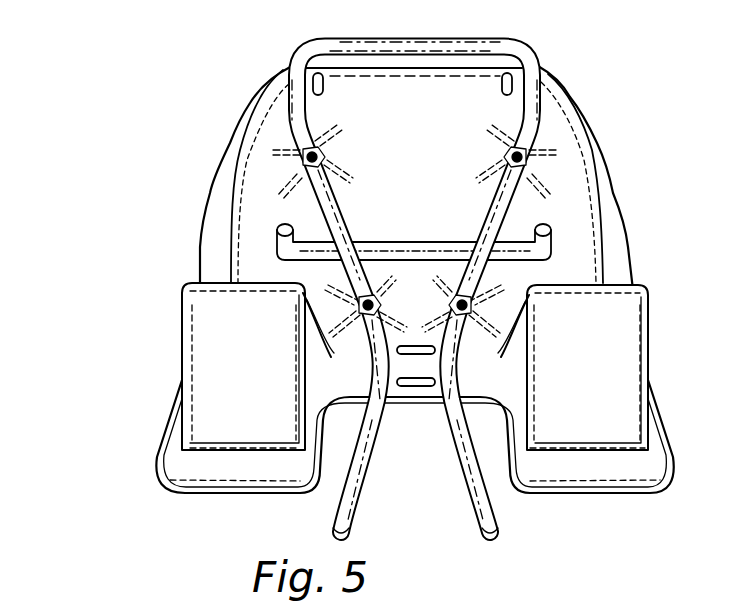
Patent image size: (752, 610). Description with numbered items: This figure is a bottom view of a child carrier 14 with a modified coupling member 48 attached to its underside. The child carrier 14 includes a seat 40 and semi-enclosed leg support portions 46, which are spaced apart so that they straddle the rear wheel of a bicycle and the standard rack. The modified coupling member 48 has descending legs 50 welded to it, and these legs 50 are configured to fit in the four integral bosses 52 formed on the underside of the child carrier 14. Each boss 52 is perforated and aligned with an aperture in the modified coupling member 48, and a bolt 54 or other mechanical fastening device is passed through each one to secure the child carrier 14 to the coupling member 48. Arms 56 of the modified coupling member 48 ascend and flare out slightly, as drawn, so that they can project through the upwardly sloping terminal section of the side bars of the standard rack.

The child carrier 14 is at (172, 201).
The seat 40 is at (403, 138).
The semi-enclosed leg support portions 46 is at (232, 380).
The modified coupling member 48 is at (377, 37).
The descending legs 50 is at (285, 223).
The integral bosses 52 is at (300, 163).
The bolt 54 is at (326, 160).
The arms 56 is at (330, 522).